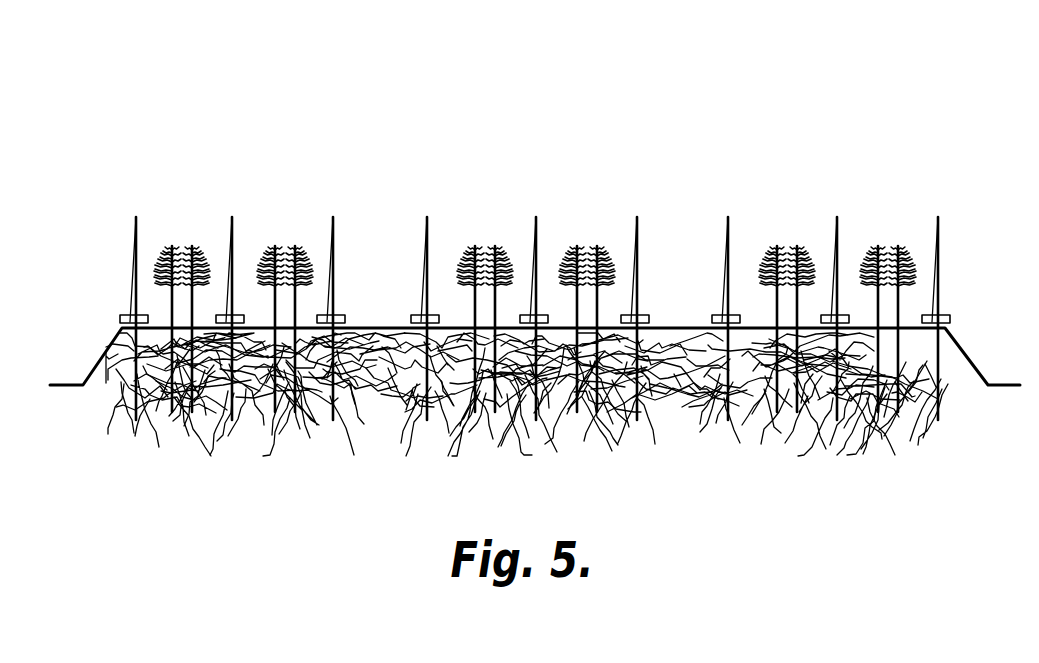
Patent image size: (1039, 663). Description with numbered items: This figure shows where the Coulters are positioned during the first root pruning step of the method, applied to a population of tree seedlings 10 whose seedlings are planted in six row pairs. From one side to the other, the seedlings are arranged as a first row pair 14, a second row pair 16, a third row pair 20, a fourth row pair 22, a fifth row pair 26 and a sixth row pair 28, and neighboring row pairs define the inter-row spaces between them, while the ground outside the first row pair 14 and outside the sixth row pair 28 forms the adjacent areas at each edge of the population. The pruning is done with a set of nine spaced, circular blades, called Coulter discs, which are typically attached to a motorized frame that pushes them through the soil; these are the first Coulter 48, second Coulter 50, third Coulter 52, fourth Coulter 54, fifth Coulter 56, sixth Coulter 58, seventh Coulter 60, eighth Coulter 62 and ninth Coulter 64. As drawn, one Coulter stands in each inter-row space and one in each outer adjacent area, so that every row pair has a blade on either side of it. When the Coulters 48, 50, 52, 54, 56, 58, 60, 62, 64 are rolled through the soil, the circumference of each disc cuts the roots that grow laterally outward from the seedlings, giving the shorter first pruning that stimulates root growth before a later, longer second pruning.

The population of tree seedlings 10 is at (172, 84).
The first row pair 14 is at (186, 242).
The second row pair 16 is at (288, 242).
The third row pair 20 is at (490, 242).
The fourth row pair 22 is at (589, 242).
The fifth row pair 26 is at (787, 242).
The sixth row pair 28 is at (890, 242).
The first Coulter 48 is at (136, 233).
The second Coulter 50 is at (232, 233).
The third Coulter 52 is at (333, 233).
The fourth Coulter 54 is at (427, 233).
The fifth Coulter 56 is at (536, 233).
The sixth Coulter 58 is at (637, 233).
The seventh Coulter 60 is at (728, 233).
The eighth Coulter 62 is at (837, 233).
The ninth Coulter 64 is at (938, 233).